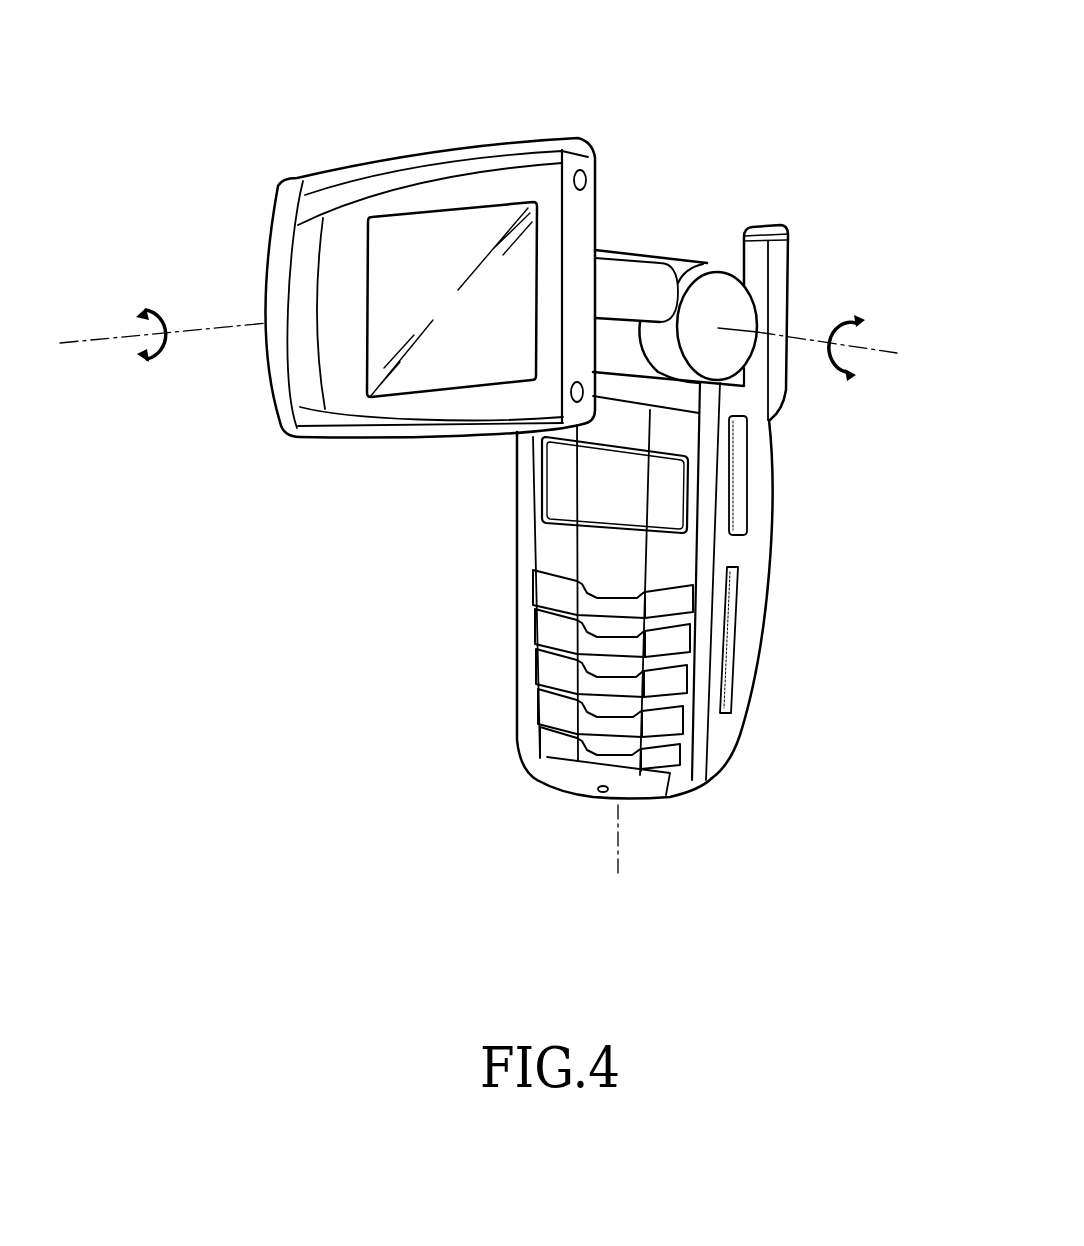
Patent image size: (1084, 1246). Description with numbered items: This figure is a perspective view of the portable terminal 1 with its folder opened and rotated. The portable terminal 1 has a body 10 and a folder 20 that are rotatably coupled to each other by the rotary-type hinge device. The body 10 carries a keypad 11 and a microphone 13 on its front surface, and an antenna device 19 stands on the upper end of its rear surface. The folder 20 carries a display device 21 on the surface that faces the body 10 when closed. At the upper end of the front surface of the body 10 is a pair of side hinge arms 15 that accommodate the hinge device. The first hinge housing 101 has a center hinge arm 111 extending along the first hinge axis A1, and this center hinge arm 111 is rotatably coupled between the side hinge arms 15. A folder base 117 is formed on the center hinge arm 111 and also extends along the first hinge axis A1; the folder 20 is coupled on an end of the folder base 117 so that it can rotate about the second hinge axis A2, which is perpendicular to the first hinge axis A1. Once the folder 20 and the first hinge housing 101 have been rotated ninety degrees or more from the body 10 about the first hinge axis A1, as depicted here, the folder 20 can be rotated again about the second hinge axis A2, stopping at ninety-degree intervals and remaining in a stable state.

The portable terminal 1 is at (502, 449).
The body 10 is at (643, 621).
The keypad 11 is at (541, 630).
The microphone 13 is at (602, 796).
The side hinge arms 15 is at (700, 385).
The antenna device 19 is at (781, 273).
The folder 20 is at (269, 248).
The display device 21 is at (443, 227).
The first hinge housing 101 is at (648, 243).
The center hinge arm 111 is at (627, 370).
The folder base 117 is at (688, 262).
The first hinge axis A1 is at (883, 347).
The second hinge axis A2 is at (110, 338).